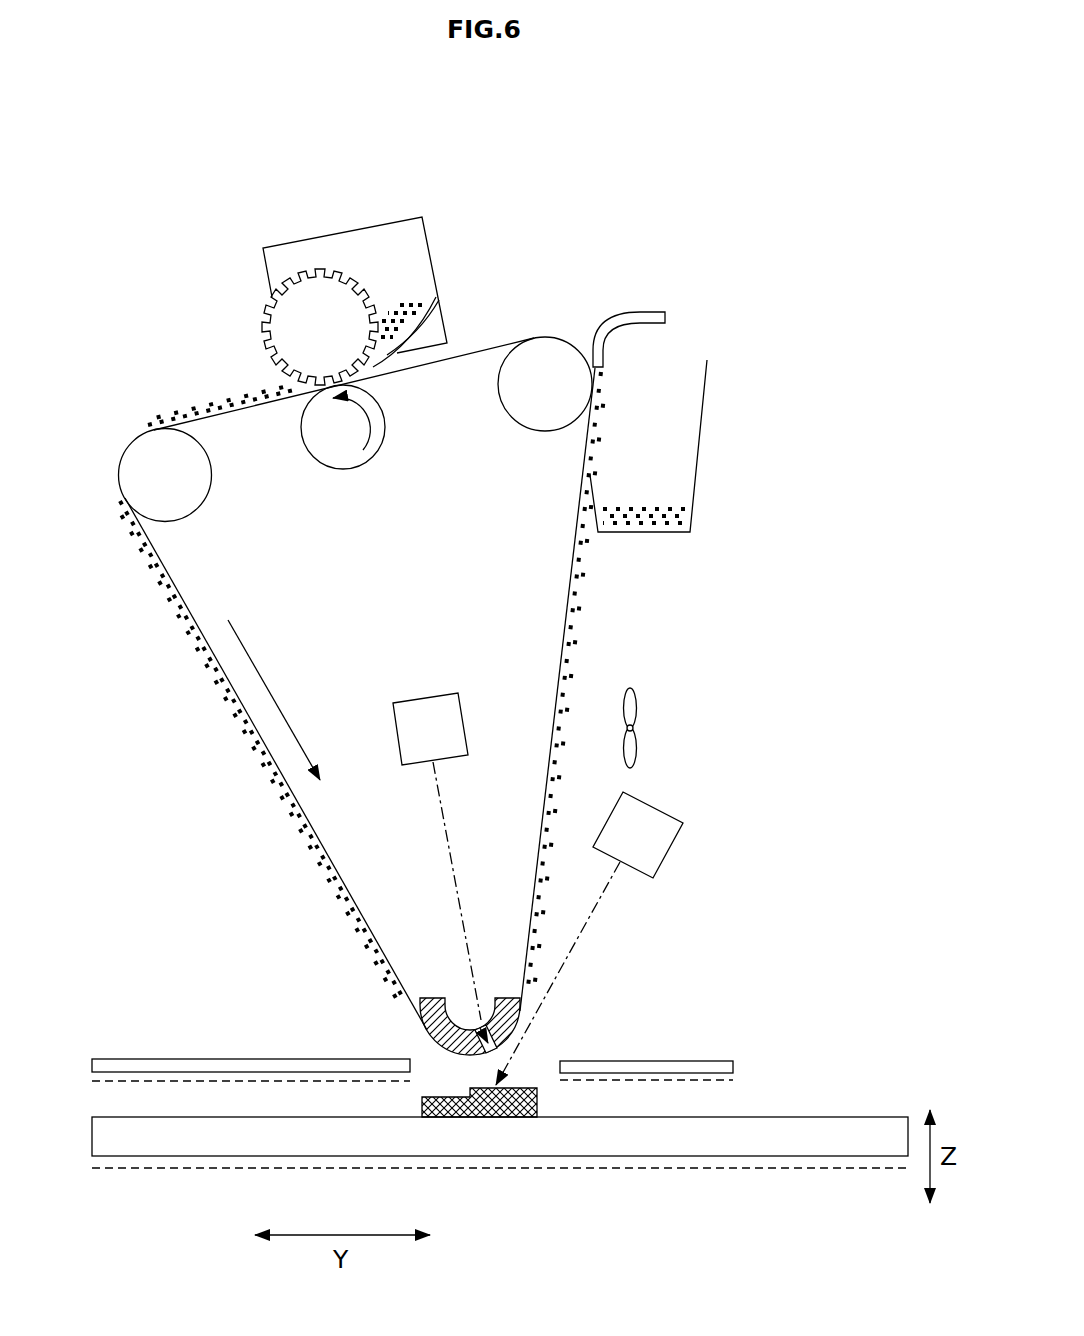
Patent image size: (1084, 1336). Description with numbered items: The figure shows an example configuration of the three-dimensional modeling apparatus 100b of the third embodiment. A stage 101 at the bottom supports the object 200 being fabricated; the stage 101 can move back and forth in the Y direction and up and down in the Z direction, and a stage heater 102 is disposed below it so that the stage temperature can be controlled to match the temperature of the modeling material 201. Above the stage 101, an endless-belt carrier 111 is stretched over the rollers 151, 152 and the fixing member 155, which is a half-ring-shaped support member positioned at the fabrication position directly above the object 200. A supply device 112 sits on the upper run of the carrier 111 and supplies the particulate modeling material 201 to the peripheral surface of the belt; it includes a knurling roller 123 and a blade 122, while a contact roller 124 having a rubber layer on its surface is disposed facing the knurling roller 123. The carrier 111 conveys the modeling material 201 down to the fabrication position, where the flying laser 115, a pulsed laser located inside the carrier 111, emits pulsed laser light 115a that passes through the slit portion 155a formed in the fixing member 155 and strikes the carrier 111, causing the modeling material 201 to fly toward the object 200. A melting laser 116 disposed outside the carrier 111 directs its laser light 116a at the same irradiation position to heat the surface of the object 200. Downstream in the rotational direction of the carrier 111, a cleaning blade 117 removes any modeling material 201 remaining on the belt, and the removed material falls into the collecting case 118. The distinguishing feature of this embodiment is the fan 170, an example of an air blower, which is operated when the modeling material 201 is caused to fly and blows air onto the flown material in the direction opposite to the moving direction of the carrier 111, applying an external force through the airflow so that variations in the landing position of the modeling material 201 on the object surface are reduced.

The three-dimensional modeling apparatus 100b is at (117, 163).
The carrier 111 is at (168, 711).
The supply device 112 is at (340, 233).
The blade 122 is at (428, 297).
The knurling roller 123 is at (278, 312).
The contact roller 124 is at (343, 470).
The roller 151 is at (538, 424).
The roller 152 is at (128, 464).
The cleaning blade 117 is at (637, 312).
The collecting case 118 is at (701, 415).
The flying laser 115 is at (427, 697).
The pulsed laser light 115a is at (455, 868).
The melting laser 116 is at (680, 843).
The laser light 116a is at (580, 935).
The fan 170 is at (637, 745).
The fixing member 155 is at (436, 1010).
The slit portion 155a is at (487, 1003).
The object 200 is at (492, 1108).
The modeling material 201 is at (397, 325).
The stage 101 is at (630, 1147).
The stage heater 102 is at (780, 1170).